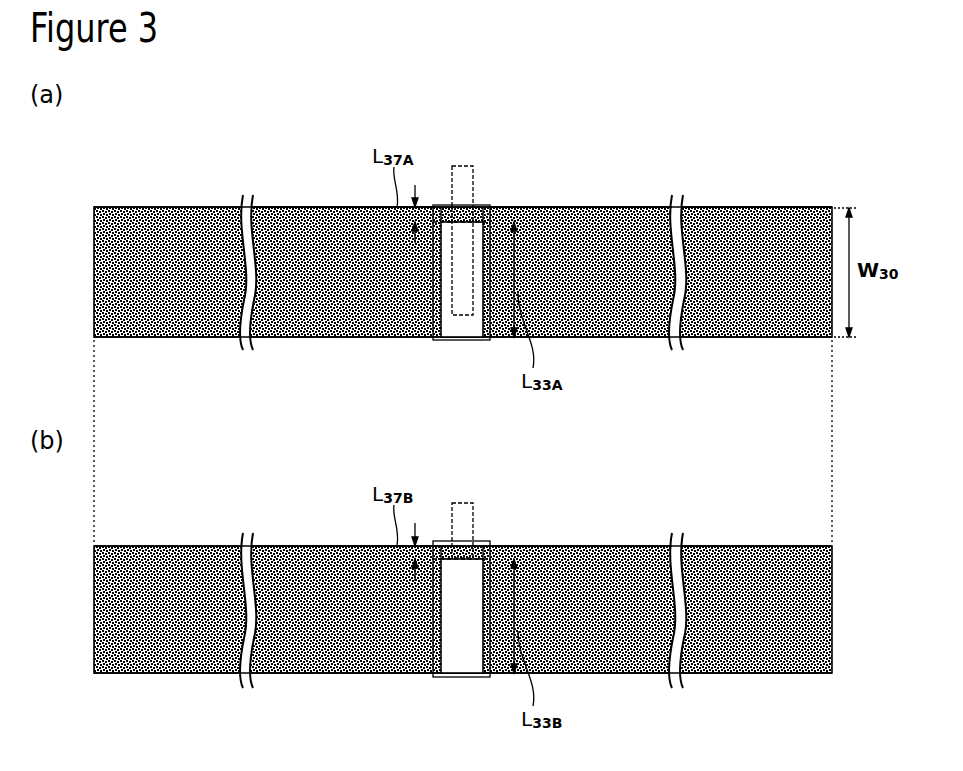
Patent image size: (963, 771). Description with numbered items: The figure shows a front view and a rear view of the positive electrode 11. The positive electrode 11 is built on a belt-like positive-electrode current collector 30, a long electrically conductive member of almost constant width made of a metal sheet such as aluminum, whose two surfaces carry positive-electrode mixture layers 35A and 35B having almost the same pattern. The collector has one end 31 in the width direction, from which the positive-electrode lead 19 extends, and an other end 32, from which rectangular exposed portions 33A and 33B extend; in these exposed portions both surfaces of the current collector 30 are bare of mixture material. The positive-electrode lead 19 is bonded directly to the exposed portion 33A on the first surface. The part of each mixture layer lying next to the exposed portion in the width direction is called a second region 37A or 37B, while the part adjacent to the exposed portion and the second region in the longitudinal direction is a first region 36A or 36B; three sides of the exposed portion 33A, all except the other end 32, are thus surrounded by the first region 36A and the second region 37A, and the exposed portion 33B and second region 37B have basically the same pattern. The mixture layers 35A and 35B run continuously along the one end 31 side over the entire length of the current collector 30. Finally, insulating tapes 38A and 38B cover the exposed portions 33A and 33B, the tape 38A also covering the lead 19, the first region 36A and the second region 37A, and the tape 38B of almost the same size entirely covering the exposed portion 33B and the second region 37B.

The positive electrode 11 is at (795, 83).
The positive-electrode lead 19 is at (466, 170).
The positive-electrode current collector 30 is at (784, 207).
The one end of the positive-electrode current collector 31 is at (182, 207).
The other end of the positive-electrode current collector 32 is at (182, 340).
The exposed portion 33A is at (447, 343).
The exposed portion 33B is at (447, 680).
The positive-electrode mixture layer 35A is at (720, 212).
The positive-electrode mixture layer 35B is at (720, 550).
The first region 36A is at (323, 215).
The first region 36B is at (311, 553).
The second region 37A is at (442, 215).
The second region 37B is at (442, 553).
The insulating tape 38A is at (480, 343).
The insulating tape 38B is at (480, 680).